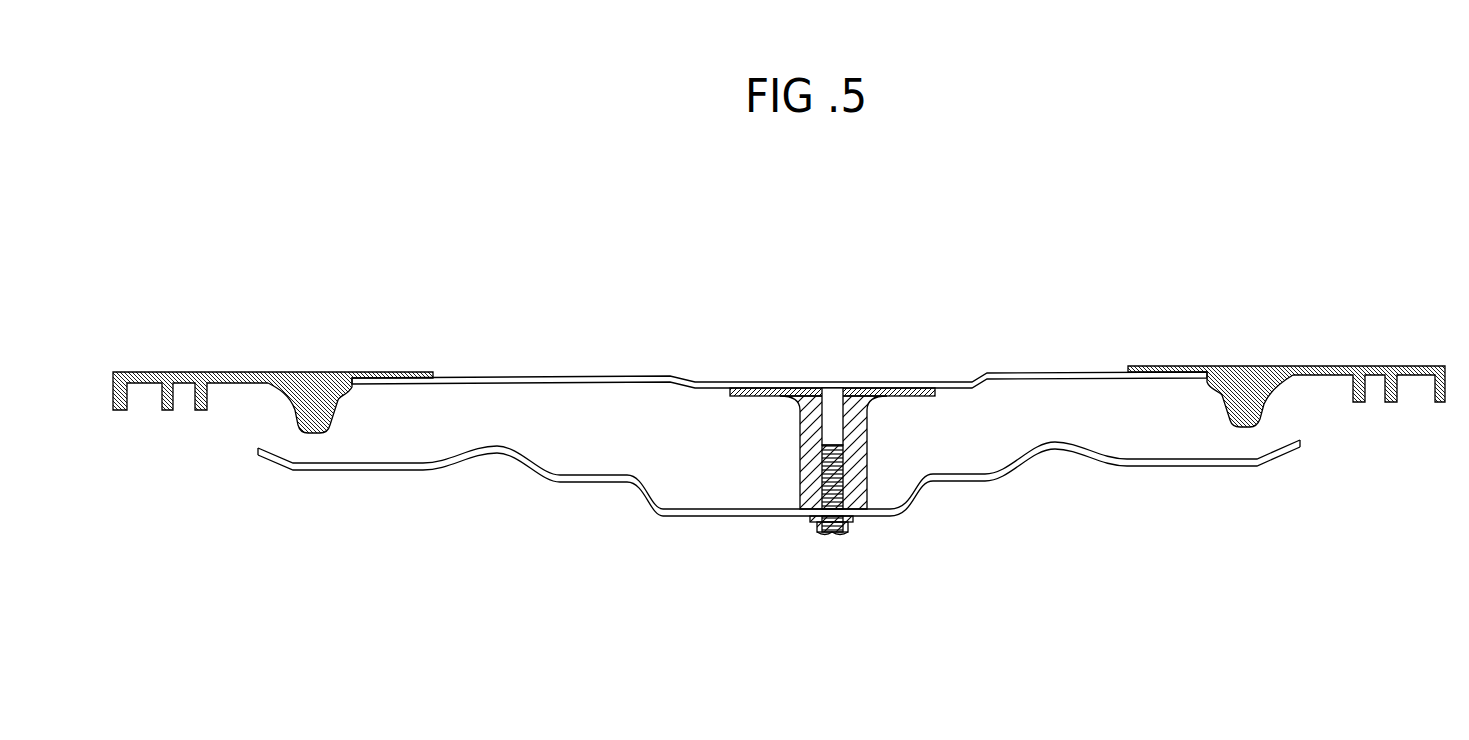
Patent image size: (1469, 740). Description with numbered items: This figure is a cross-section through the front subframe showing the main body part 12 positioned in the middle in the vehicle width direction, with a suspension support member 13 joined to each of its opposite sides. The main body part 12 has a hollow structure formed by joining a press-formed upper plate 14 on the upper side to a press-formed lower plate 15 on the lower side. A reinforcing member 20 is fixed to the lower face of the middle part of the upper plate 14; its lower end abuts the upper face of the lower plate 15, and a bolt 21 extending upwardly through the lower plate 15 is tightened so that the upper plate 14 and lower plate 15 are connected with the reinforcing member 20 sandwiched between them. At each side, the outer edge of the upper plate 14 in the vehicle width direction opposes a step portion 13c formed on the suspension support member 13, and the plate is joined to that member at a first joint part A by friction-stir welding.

The main body part 12 is at (583, 349).
The suspension support member 13 is at (215, 370).
The step portion 13c is at (350, 384).
The upper plate 14 is at (943, 377).
The lower plate 15 is at (983, 481).
The reinforcing member 20 is at (800, 408).
The bolt 21 is at (832, 535).
The first joint part A is at (400, 370).